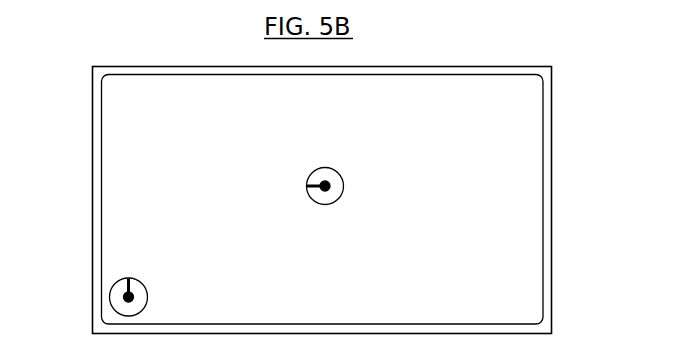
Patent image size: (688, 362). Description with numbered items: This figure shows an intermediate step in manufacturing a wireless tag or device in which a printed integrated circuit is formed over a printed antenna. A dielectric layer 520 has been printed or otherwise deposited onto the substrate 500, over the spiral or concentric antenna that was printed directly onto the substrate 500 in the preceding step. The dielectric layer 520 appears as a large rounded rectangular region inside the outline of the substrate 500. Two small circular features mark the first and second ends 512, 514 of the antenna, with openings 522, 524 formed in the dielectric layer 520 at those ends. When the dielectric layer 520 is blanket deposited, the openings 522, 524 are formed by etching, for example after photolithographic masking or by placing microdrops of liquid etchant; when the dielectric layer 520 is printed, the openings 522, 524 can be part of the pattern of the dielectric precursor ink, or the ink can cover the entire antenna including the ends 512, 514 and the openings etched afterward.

The substrate 500 is at (552, 110).
The dielectric layer 520 is at (532, 293).
The first end of the antenna 512 is at (148, 297).
The second end of the antenna 514 is at (344, 186).
The opening 522 is at (128, 278).
The opening 524 is at (322, 165).